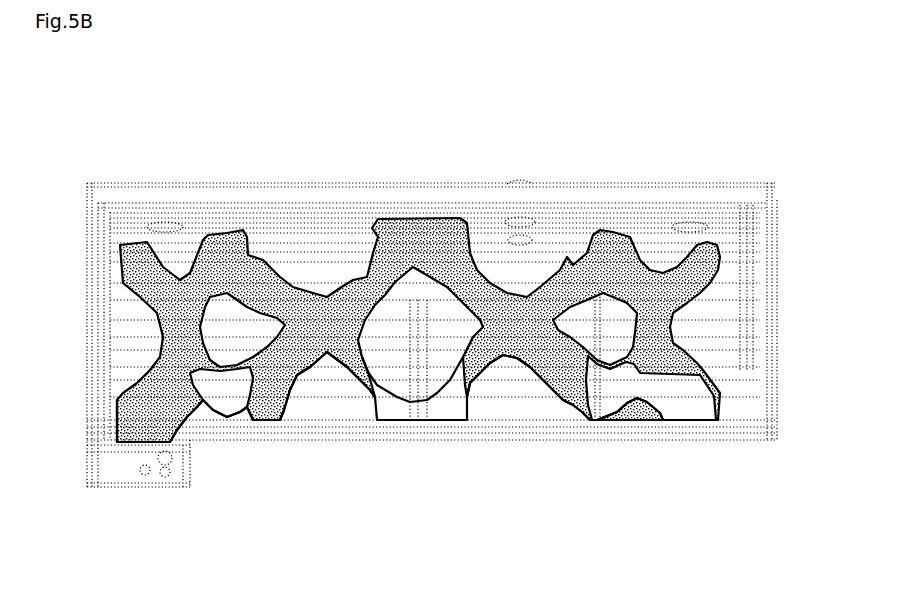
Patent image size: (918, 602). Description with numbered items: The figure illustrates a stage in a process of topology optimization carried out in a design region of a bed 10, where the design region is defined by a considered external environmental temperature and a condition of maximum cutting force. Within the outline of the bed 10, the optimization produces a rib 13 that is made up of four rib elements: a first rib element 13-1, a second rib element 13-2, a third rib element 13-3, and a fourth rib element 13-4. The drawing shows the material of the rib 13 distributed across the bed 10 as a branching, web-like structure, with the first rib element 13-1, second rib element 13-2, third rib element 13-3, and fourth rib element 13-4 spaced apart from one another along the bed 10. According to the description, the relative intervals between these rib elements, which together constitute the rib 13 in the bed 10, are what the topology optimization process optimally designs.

The bed 10 is at (150, 172).
The rib 13 is at (425, 225).
The first rib element 13-1 is at (193, 373).
The second rib element 13-2 is at (318, 340).
The third rib element 13-3 is at (515, 325).
The fourth rib element 13-4 is at (653, 380).